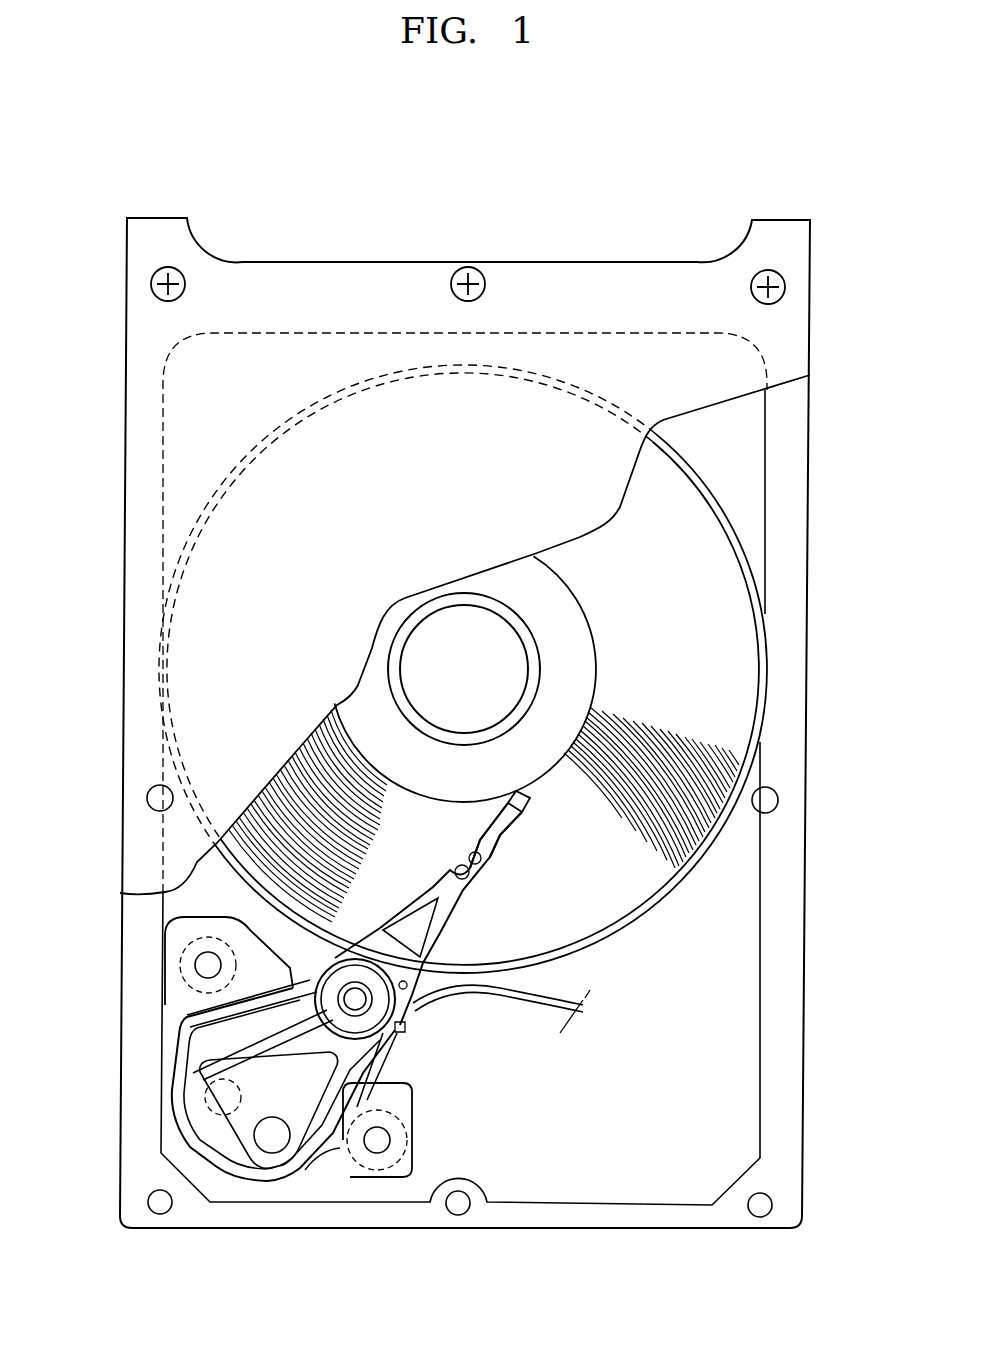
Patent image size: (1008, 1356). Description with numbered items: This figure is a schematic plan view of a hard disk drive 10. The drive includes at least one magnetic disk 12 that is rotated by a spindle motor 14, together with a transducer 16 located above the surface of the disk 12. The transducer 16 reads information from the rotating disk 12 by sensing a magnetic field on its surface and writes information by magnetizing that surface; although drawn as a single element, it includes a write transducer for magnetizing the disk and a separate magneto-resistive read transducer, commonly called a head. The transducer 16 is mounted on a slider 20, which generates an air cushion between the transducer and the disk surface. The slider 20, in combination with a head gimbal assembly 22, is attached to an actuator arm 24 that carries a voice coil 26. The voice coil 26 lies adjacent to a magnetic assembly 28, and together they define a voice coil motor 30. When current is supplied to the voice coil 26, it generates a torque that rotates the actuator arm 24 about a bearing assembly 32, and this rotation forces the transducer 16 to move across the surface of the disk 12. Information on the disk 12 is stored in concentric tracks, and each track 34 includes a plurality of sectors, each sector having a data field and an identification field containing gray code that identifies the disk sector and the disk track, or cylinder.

The hard disk drive 10 is at (606, 178).
The magnetic disk 12 is at (722, 604).
The spindle motor 14 is at (442, 645).
The transducer 16 is at (531, 800).
The slider 20 is at (512, 815).
The head gimbal assembly 22 is at (468, 911).
The actuator arm 24 is at (265, 1018).
The voice coil 26 is at (195, 1088).
The magnetic assembly 28 is at (205, 1025).
The voice coil motor 30 is at (323, 1157).
The bearing assembly 32 is at (375, 1020).
The track 34 is at (290, 815).